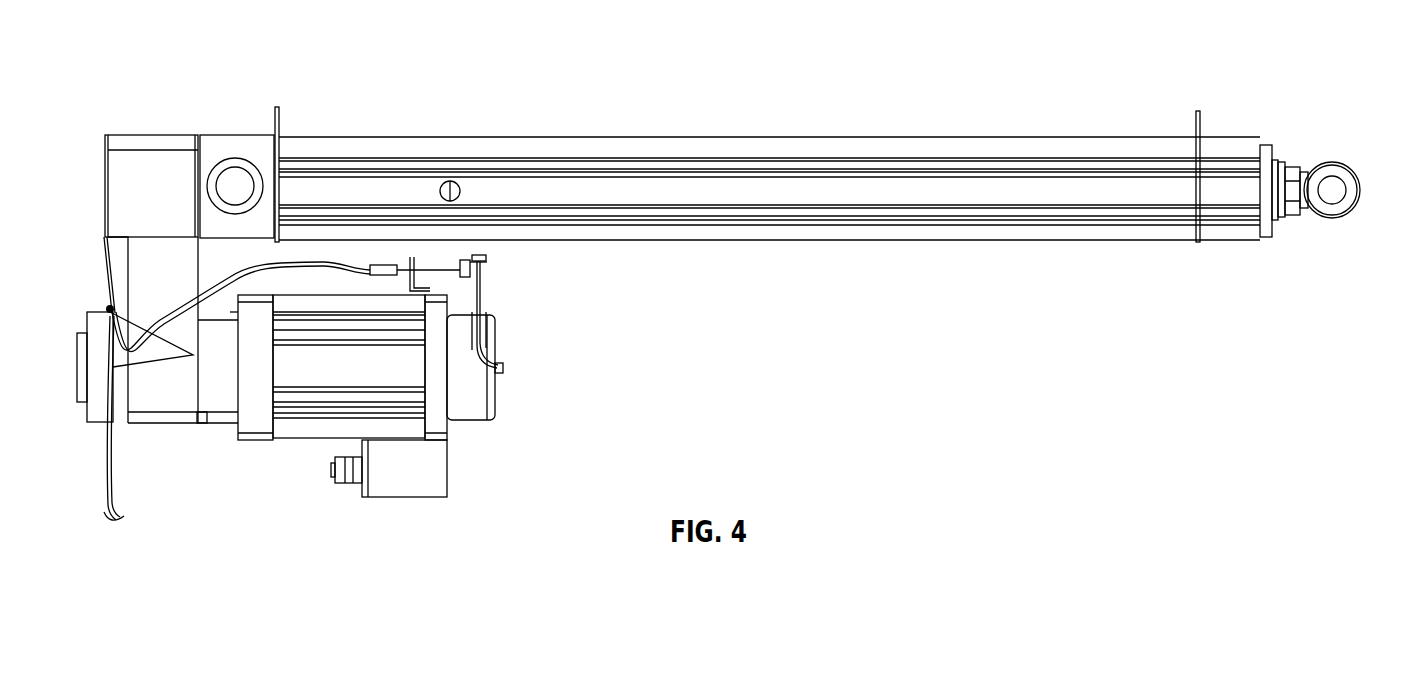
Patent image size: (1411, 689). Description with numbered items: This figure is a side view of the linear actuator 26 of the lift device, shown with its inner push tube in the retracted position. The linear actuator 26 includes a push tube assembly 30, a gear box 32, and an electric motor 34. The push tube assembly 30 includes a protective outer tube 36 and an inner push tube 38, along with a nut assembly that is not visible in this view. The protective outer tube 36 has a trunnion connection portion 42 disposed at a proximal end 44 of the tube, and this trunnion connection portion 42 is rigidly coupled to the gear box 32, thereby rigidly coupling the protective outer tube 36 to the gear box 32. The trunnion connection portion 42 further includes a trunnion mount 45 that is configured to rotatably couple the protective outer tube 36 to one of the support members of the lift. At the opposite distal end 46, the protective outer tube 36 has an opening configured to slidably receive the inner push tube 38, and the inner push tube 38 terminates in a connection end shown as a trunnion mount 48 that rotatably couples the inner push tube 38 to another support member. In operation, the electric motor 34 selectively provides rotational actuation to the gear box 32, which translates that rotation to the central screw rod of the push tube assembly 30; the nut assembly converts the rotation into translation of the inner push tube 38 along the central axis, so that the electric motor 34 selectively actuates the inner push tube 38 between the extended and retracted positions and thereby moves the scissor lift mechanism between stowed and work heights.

The linear actuator 26 is at (118, 96).
The push tube assembly 30 is at (1000, 114).
The gear box 32 is at (145, 252).
The electric motor 34 is at (403, 373).
The protective outer tube 36 is at (813, 192).
The inner push tube 38 is at (1282, 218).
The trunnion connection portion 42 is at (258, 148).
The proximal end 44 is at (197, 170).
The trunnion mount 45 is at (245, 178).
The distal end 46 is at (1278, 150).
The trunnion mount 48 is at (1332, 175).